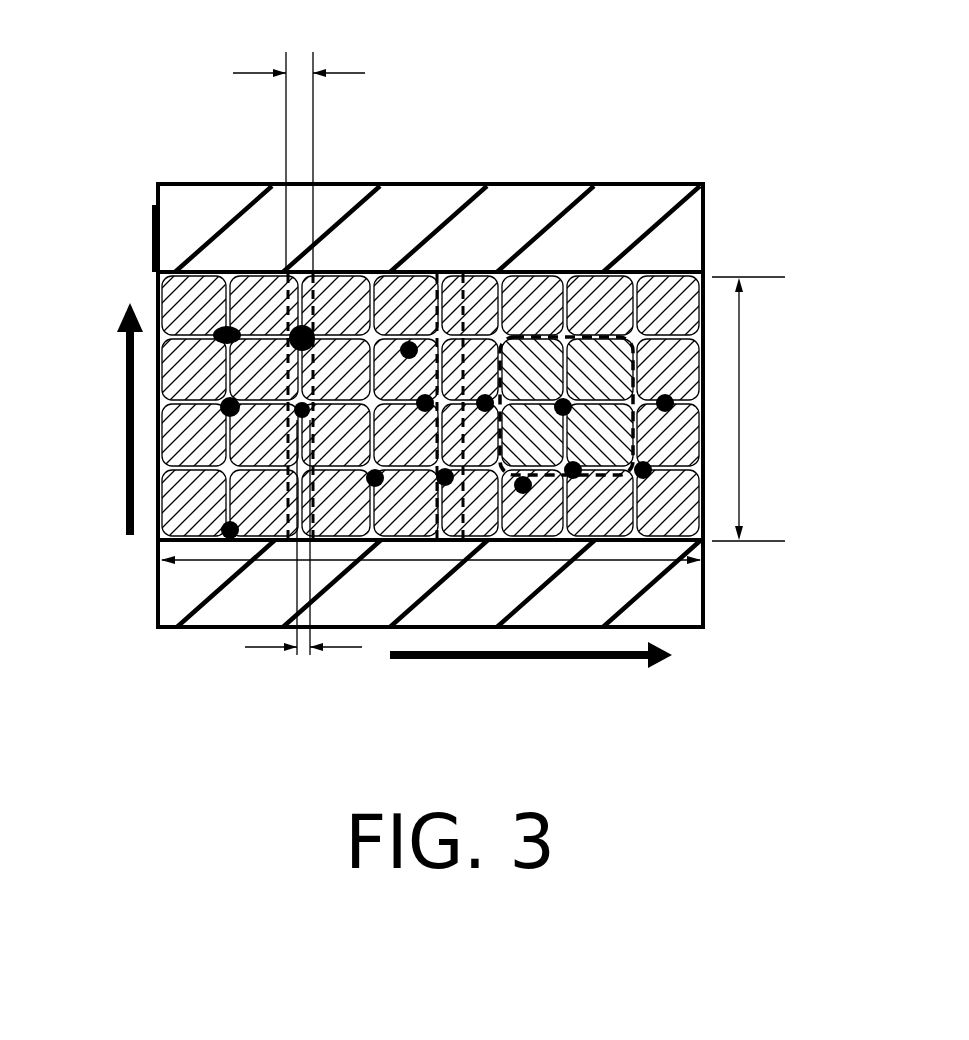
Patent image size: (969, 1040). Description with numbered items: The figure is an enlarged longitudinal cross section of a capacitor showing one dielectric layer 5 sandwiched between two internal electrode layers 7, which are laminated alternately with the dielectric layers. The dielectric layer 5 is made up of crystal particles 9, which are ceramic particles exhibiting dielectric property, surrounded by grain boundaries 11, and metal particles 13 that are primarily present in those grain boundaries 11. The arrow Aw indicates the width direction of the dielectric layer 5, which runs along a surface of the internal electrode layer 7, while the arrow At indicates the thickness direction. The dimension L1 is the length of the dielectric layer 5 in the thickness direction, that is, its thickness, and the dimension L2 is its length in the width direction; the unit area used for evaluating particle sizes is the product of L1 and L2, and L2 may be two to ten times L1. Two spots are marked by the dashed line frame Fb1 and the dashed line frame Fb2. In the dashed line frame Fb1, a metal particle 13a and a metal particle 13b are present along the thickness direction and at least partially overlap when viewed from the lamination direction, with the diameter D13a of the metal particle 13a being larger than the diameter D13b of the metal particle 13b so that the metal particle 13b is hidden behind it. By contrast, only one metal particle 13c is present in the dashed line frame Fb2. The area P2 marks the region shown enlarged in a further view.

The dielectric layer 5 is at (806, 272).
The internal electrode layer 7 is at (720, 185).
The crystal particle 9 is at (210, 292).
The grain boundary 11 is at (400, 295).
The metal particle 13 is at (220, 332).
The metal particle 13a is at (312, 334).
The metal particle 13b is at (294, 415).
The metal particle 13c is at (488, 392).
The dashed line frame Fb1 is at (283, 378).
The dashed line frame Fb2 is at (466, 305).
The area P2 is at (622, 474).
The arrow (thickness direction) At is at (115, 419).
The arrow (width direction) Aw is at (531, 680).
The length in thickness direction L1 is at (748, 409).
The length in width direction L2 is at (431, 577).
The diameter of metal particle 13a D13a is at (299, 144).
The diameter of metal particle 13b D13b is at (303, 555).